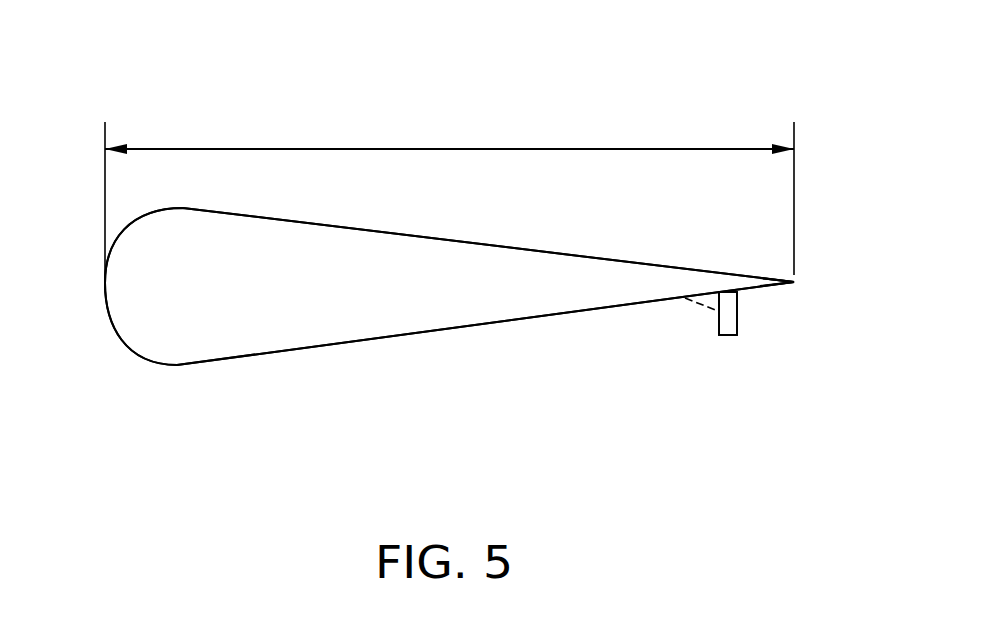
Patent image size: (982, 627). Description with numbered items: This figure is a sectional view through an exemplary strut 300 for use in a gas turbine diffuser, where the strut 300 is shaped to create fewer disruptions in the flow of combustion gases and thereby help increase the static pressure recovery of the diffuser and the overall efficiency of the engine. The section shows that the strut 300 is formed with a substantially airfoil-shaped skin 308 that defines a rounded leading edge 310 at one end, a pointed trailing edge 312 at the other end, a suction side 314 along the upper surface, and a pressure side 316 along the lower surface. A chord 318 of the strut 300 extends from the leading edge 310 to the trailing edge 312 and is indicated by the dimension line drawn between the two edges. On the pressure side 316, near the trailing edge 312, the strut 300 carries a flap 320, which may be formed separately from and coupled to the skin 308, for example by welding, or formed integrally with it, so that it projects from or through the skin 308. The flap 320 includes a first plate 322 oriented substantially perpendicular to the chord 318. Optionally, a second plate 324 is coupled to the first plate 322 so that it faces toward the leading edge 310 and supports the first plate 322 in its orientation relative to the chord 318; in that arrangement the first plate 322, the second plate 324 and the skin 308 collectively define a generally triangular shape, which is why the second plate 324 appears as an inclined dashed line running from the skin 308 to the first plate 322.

The strut 300 is at (202, 107).
The airfoil-shaped skin 308 is at (173, 375).
The leading edge 310 is at (104, 283).
The trailing edge 312 is at (797, 282).
The suction side 314 is at (423, 235).
The pressure side 316 is at (360, 343).
The chord 318 is at (345, 148).
The flap 320 is at (733, 343).
The first plate 322 is at (737, 309).
The second plate 324 is at (700, 307).